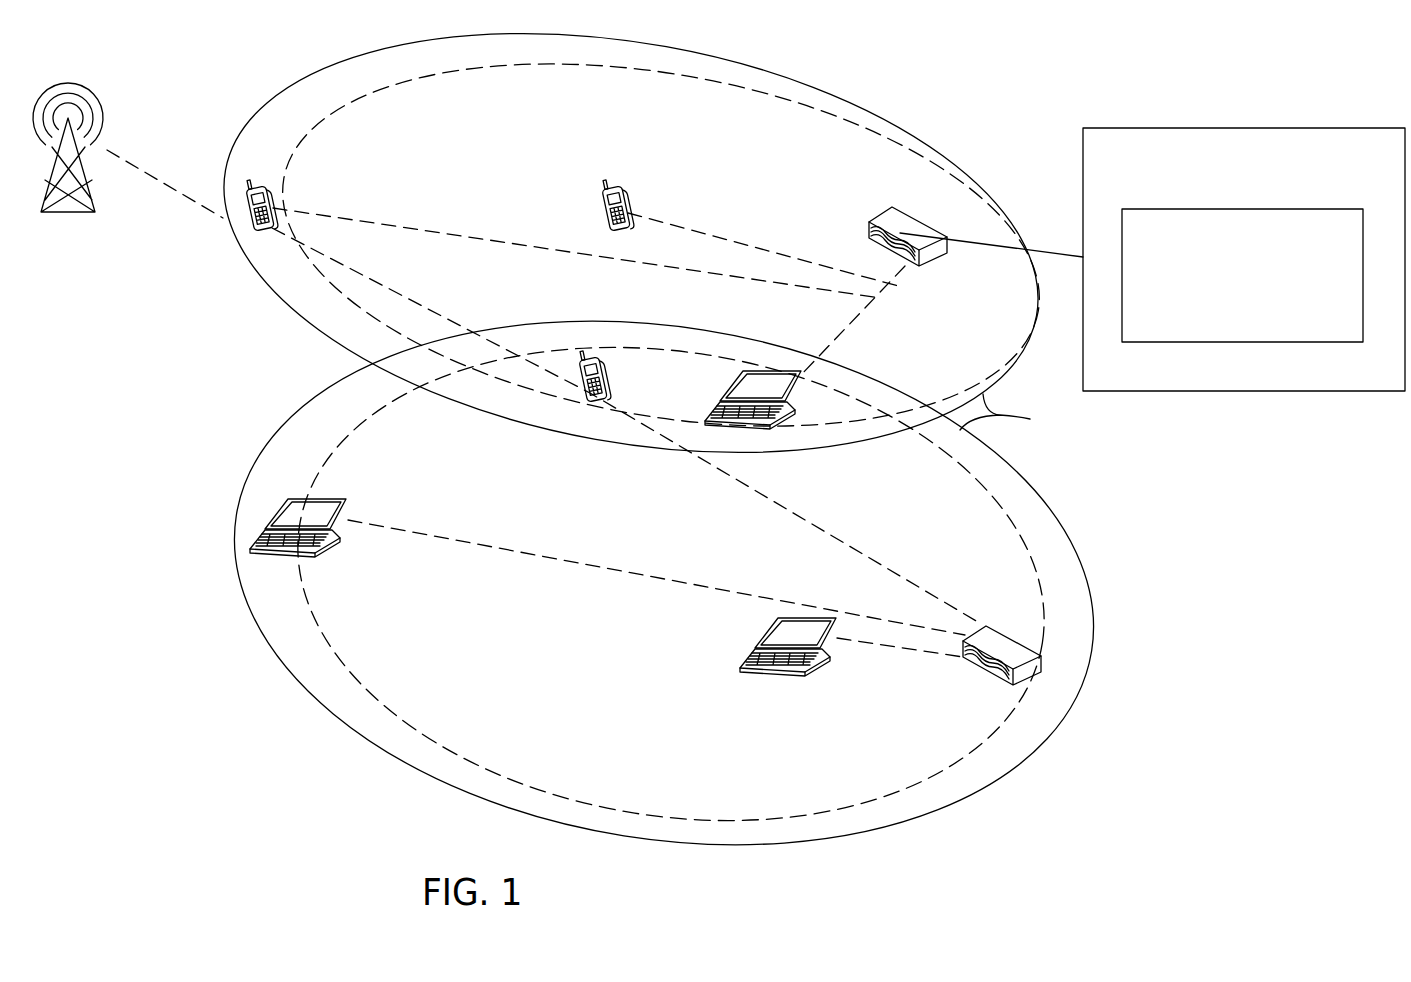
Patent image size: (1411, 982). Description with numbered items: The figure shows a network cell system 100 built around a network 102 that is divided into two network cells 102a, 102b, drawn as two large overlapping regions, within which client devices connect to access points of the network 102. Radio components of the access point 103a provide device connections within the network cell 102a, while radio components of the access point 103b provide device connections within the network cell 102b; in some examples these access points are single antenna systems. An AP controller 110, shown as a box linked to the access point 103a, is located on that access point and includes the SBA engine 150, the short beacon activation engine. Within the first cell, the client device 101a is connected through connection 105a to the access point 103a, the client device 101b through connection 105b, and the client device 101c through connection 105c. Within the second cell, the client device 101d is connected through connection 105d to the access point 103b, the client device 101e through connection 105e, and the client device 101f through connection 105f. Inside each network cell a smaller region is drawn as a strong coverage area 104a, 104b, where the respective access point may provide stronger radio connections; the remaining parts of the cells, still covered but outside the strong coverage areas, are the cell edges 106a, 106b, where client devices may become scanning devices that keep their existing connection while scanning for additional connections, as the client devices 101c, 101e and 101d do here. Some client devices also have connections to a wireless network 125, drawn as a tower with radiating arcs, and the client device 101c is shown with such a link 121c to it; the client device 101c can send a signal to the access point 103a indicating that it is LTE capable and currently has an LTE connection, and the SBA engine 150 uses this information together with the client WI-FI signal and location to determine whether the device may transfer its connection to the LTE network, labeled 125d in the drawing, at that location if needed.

The network cell system 100 is at (1328, 45).
The network 102 is at (1017, 413).
The network cell 102a is at (802, 80).
The network cell 102b is at (306, 698).
The strong coverage area 104a is at (438, 73).
The strong coverage area 104b is at (364, 436).
The cell edge 106a is at (290, 162).
The cell edge 106b is at (327, 464).
The client device 101a is at (808, 408).
The client device 101b is at (600, 200).
The client device 101c is at (253, 234).
The client device 101d is at (604, 366).
The client device 101e is at (255, 544).
The client device 101f is at (744, 654).
The access point 103a is at (904, 208).
The access point 103b is at (975, 672).
The connection 105a is at (872, 317).
The connection 105b is at (690, 230).
The connection 105c is at (469, 239).
The connection 105d is at (790, 506).
The connection 105e is at (576, 564).
The connection 105f is at (859, 646).
The AP controller 110 is at (1262, 381).
The SBA engine 150 is at (1262, 330).
The cellular link 121c is at (164, 180).
The wireless network 125 is at (104, 108).
The cellular network 125d is at (1167, 603).